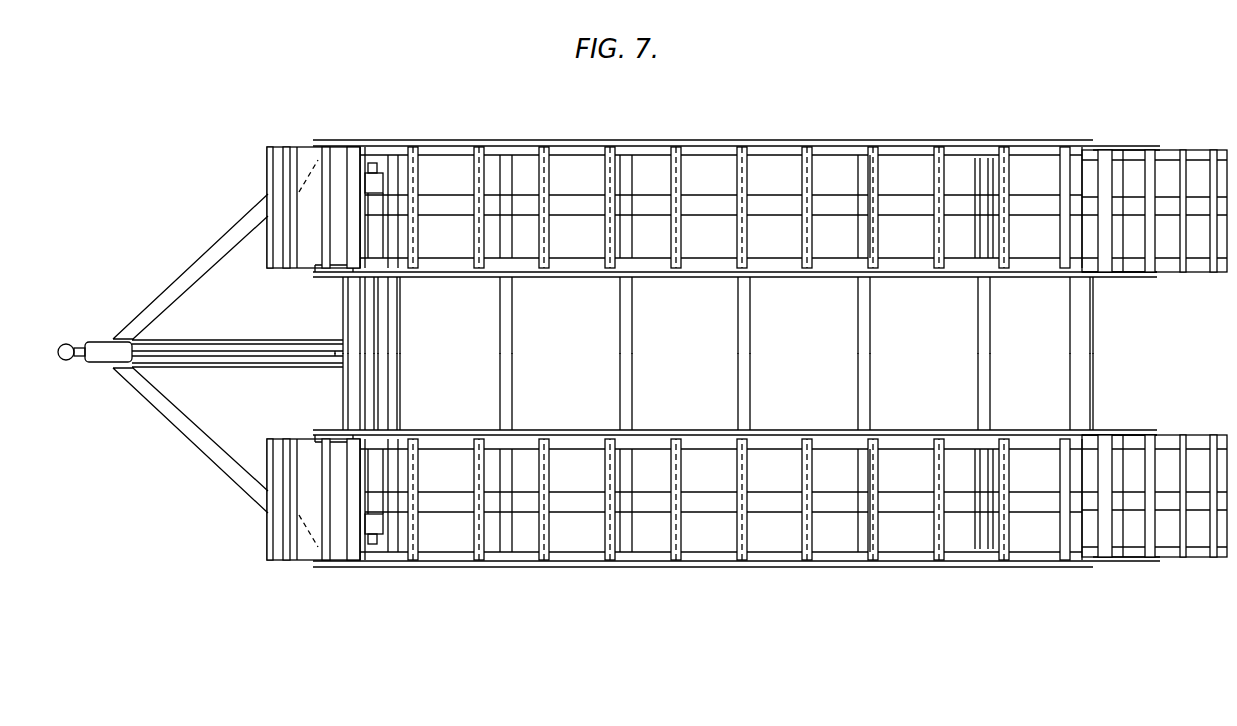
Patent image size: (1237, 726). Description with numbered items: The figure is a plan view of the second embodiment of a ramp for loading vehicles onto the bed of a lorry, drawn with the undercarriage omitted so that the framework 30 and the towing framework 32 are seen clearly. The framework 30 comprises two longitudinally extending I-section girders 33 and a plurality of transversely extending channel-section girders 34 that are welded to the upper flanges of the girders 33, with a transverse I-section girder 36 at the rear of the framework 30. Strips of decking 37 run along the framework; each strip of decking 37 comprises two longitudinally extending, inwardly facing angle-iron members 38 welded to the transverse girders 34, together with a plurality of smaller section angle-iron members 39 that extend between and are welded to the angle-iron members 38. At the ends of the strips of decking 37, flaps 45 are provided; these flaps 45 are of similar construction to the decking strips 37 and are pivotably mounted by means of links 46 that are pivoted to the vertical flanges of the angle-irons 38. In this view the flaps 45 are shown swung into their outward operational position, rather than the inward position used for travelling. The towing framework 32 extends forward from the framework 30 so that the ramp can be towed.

The framework 30 is at (642, 359).
The towing framework 32 is at (177, 463).
The longitudinally extending I-section girders 33 is at (765, 198).
The transversely extending channel-section girders 34 is at (345, 320).
The transverse I-section girder 36 is at (1082, 357).
The strips of decking 37 is at (651, 136).
The longitudinally extending inwardly facing angle-iron members 38 is at (703, 150).
The smaller section angle-iron members 39 is at (420, 146).
The flaps 45 is at (266, 285).
The links 46 is at (329, 139).